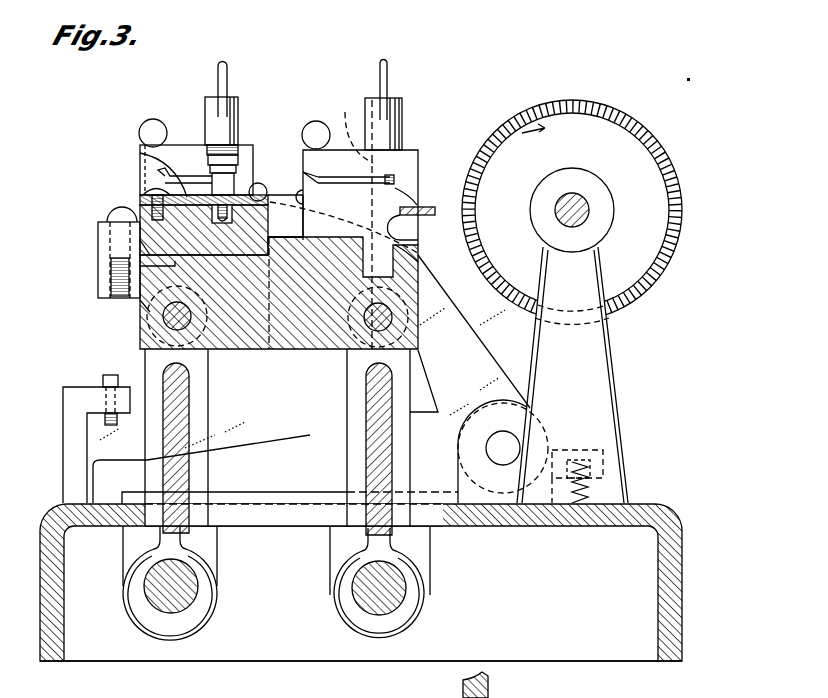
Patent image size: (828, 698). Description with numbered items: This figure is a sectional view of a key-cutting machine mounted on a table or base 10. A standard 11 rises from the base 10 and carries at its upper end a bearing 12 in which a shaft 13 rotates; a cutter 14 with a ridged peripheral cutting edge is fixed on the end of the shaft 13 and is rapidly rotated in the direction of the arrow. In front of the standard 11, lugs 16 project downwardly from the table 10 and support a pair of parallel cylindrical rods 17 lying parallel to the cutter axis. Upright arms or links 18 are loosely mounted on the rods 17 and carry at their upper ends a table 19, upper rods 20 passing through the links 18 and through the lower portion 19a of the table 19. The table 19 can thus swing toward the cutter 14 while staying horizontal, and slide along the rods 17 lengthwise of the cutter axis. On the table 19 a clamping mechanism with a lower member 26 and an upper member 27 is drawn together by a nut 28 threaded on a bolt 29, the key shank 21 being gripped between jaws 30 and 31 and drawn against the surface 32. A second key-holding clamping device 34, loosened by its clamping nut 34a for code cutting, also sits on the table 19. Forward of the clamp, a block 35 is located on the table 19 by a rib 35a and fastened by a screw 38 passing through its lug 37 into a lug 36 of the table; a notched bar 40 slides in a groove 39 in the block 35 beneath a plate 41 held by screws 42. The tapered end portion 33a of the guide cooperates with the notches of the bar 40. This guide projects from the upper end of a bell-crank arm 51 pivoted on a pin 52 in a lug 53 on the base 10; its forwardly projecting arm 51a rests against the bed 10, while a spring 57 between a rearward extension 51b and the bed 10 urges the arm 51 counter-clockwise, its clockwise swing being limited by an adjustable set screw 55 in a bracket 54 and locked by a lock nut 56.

The base 10 is at (675, 535).
The standard 11 is at (600, 352).
The bearing 12 is at (600, 202).
The shaft 13 is at (585, 195).
The cutter 14 is at (590, 122).
The lugs 16 is at (217, 598).
The parallel cylindrical rods 17 is at (188, 580).
The upright arms or links 18 is at (185, 437).
The table 19 is at (275, 248).
The lower portion of the table 19a is at (280, 350).
The upper shafts or rods 20 is at (165, 322).
The shank 21 is at (430, 210).
The lower member 26 is at (393, 180).
The upper member 27 is at (400, 152).
The nut 28 is at (370, 108).
The bolt 29 is at (325, 128).
The jaw 30 is at (412, 200).
The jaw 31 is at (400, 222).
The surface 32 is at (410, 240).
The end portion of the guide 33a is at (285, 195).
The key-holding clamping device 34 is at (190, 145).
The clamping nut 34a is at (224, 75).
The block 35 is at (140, 245).
The downward projection or rib 35a is at (143, 305).
The lug 36 is at (98, 280).
The lug 37 is at (98, 236).
The screw 38 is at (115, 212).
The longitudinal recess or groove 39 is at (140, 153).
The elongated plate or bar 40 is at (193, 197).
The plate 41 is at (257, 185).
The screws 42 is at (300, 195).
The arm 51 is at (470, 332).
The forwardly projecting arm 51a is at (282, 443).
The rearward extension 51b is at (603, 458).
The pin 52 is at (495, 448).
The lug 53 is at (474, 419).
The bracket 54 is at (70, 420).
The adjustable set screw 55 is at (110, 428).
The lock nut 56 is at (103, 378).
The spring 57 is at (592, 492).